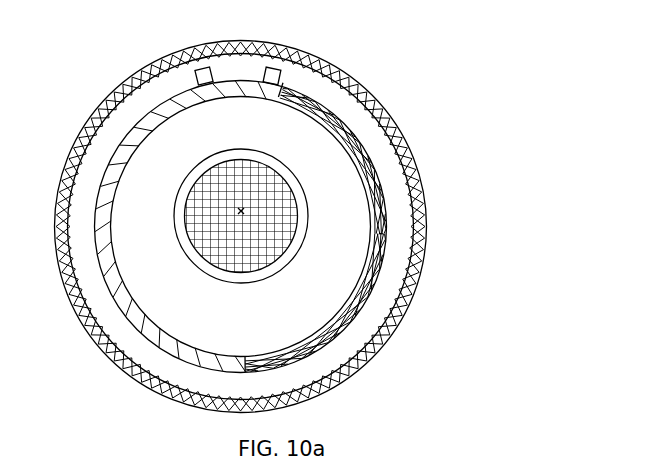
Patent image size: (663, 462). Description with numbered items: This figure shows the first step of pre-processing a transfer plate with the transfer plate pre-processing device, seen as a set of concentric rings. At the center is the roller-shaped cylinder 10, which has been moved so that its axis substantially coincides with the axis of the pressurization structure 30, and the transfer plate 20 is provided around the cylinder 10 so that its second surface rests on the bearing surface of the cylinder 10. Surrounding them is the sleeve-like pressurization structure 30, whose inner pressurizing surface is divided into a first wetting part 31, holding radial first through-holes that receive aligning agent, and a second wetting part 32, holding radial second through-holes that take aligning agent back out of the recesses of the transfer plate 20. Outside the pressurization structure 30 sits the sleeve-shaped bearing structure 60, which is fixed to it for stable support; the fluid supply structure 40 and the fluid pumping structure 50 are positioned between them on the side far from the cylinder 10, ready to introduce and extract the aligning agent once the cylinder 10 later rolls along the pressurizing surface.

The cylinder 10 is at (212, 207).
The transfer plate 20 is at (287, 167).
The pressurization structure 30 is at (302, 227).
The first wetting part 31 is at (378, 200).
The second wetting part 32 is at (472, 148).
The fluid supply structure 40 is at (275, 69).
The fluid pumping structure 50 is at (199, 70).
The bearing structure 60 is at (391, 113).